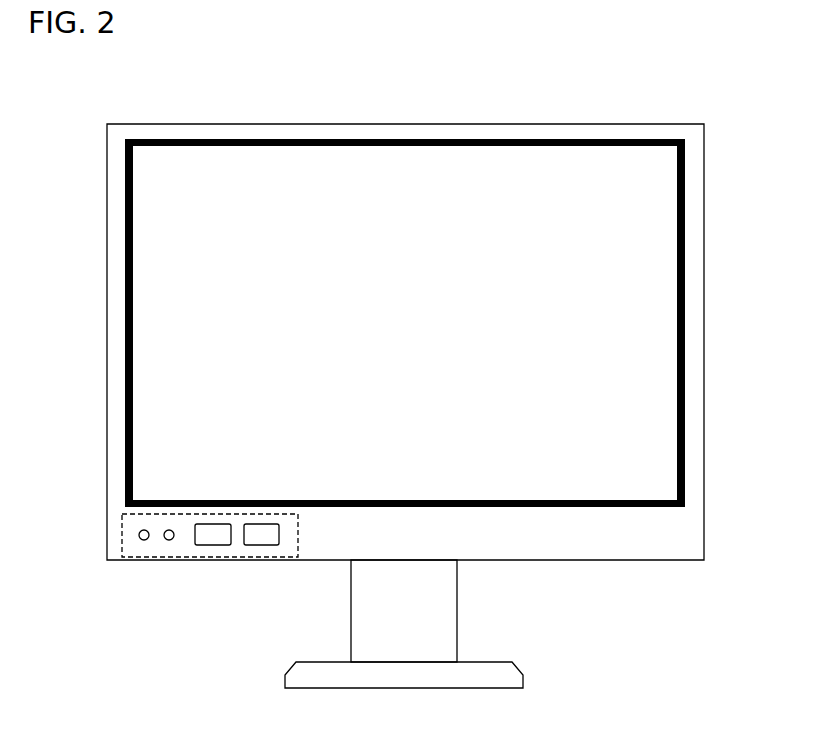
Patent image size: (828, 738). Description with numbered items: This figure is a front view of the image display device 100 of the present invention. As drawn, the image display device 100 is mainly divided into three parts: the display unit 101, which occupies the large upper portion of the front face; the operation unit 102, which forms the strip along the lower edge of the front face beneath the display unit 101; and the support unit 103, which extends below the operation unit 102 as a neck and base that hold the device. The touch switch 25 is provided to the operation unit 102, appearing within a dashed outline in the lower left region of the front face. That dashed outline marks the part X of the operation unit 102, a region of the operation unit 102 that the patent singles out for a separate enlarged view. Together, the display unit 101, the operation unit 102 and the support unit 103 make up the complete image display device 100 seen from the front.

The image display device 100 is at (449, 353).
The display unit 101 is at (717, 125).
The operation unit 102 is at (449, 577).
The support unit 103 is at (537, 563).
The touch switch 25 is at (233, 570).
The part X of the operation unit X is at (160, 560).